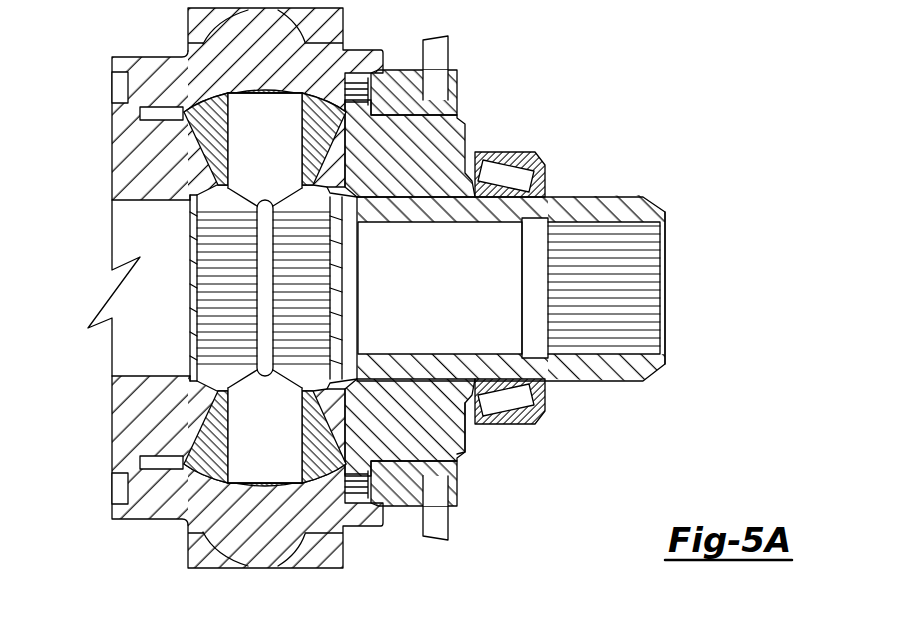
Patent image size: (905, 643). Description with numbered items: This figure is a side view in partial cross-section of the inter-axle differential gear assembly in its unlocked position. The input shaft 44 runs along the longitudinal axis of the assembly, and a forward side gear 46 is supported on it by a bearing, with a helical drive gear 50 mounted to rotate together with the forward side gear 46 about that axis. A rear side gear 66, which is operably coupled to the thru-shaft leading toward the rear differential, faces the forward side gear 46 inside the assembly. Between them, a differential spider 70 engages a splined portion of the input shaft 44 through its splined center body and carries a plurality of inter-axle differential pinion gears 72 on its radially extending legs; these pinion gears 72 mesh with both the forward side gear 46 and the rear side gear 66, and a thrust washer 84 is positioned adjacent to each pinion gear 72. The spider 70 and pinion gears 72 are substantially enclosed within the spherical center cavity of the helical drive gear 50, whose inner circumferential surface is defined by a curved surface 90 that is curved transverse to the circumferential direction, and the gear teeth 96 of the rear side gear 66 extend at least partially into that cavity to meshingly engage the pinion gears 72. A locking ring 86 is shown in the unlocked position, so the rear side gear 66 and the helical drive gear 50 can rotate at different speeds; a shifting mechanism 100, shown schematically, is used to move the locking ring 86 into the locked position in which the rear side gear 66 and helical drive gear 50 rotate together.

The input shaft 44 is at (138, 349).
The forward side gear 46 is at (147, 400).
The helical drive gear 50 is at (265, 570).
The rear side gear 66 is at (460, 432).
The differential spider 70 is at (258, 460).
The inter-axle differential pinion gears 72 is at (212, 143).
The thrust washer 84 is at (207, 103).
The locking ring 86 is at (457, 108).
The curved surface 90 is at (303, 100).
The gear teeth 96 is at (462, 455).
The shifting mechanism 100 is at (440, 50).